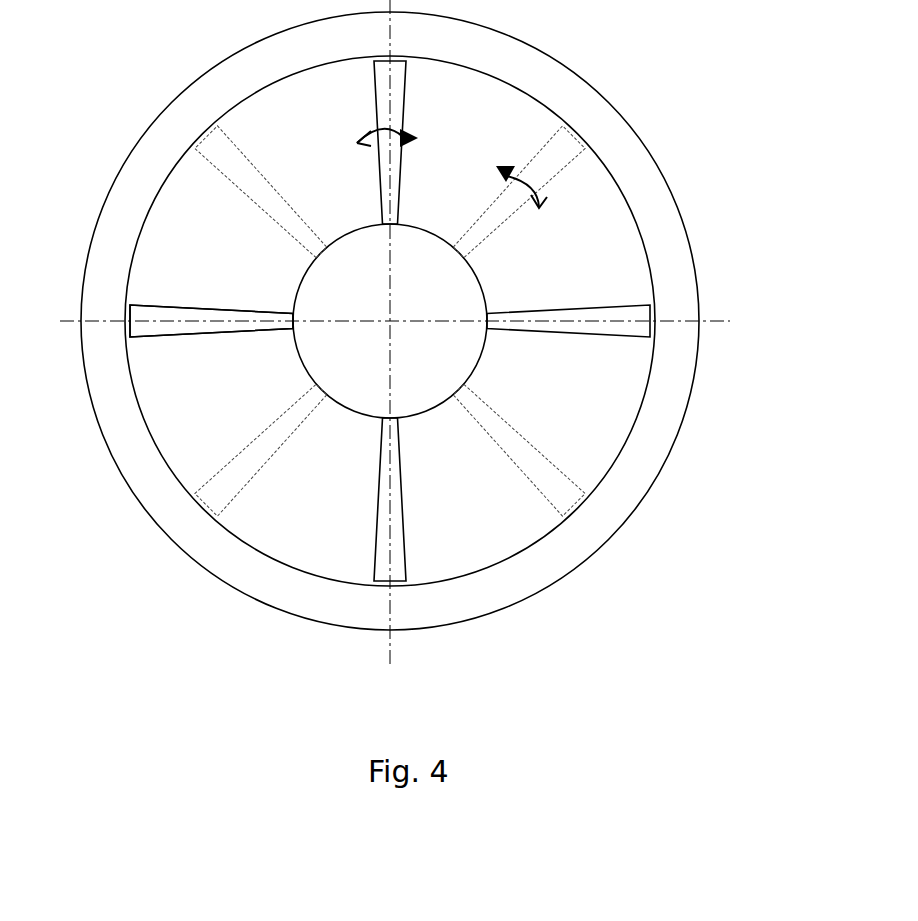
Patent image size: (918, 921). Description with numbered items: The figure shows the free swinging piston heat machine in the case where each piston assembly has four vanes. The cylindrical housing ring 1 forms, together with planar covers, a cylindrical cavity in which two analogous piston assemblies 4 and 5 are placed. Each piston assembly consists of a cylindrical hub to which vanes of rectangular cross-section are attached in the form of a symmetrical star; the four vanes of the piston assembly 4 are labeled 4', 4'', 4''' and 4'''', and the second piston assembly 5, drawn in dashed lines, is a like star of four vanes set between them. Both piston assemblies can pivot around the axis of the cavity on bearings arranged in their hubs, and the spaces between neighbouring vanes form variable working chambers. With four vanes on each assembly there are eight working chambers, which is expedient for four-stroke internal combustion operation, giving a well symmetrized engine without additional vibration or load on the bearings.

The cylindrical housing ring 1 is at (188, 112).
The piston assembly 4 is at (168, 283).
The vane of piston assembly 4' is at (166, 364).
The vane of piston assembly 4'' is at (222, 503).
The vane of piston assembly 4''' is at (571, 133).
The vane of piston assembly 4'''' is at (631, 288).
The piston assembly 5 is at (215, 481).